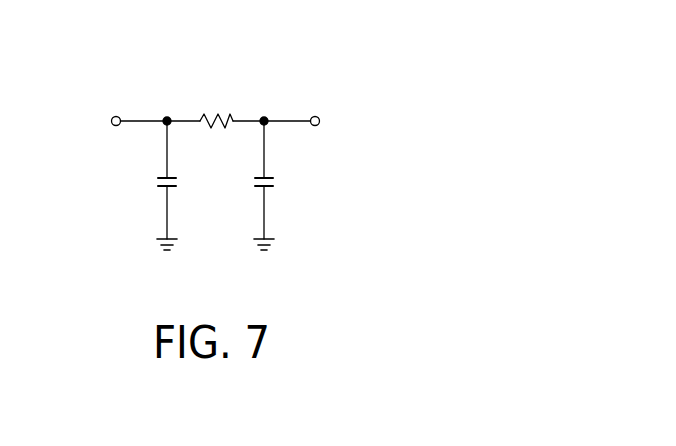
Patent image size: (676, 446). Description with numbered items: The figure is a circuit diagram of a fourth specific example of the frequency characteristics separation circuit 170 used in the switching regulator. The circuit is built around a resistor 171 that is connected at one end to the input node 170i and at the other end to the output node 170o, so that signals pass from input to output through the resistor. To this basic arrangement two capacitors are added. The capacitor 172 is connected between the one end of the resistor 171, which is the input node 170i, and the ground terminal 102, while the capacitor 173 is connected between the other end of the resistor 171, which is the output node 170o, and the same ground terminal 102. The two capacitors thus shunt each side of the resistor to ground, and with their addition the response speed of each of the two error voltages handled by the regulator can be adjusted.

The frequency characteristics separation circuit 170 is at (333, 32).
The input node 170i is at (112, 117).
The output node 170o is at (318, 117).
The resistor 171 is at (214, 114).
The capacitor 172 is at (198, 165).
The capacitor 173 is at (297, 165).
The ground terminal 102 is at (172, 239).